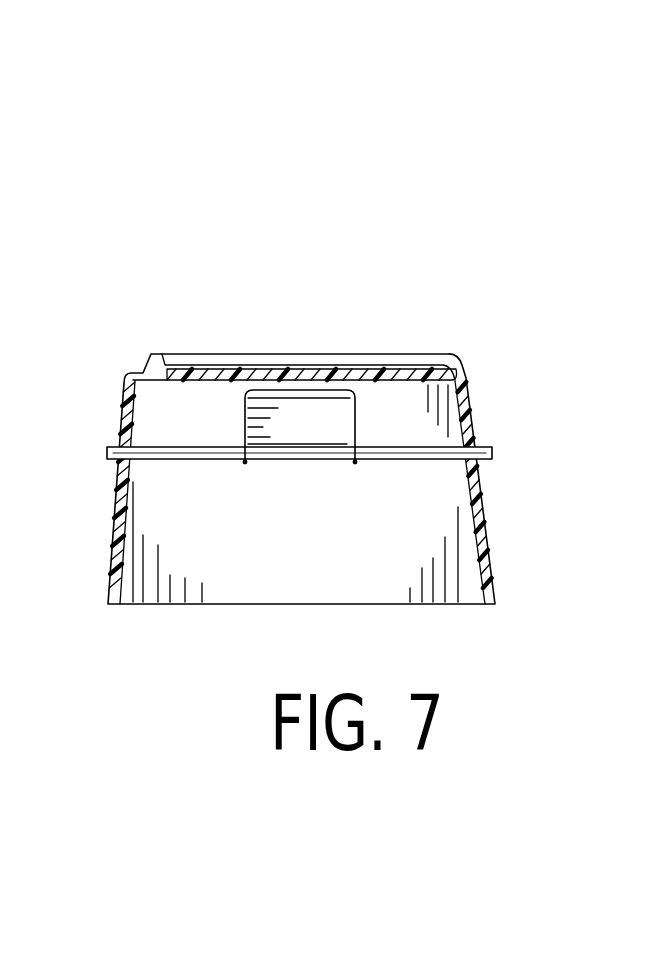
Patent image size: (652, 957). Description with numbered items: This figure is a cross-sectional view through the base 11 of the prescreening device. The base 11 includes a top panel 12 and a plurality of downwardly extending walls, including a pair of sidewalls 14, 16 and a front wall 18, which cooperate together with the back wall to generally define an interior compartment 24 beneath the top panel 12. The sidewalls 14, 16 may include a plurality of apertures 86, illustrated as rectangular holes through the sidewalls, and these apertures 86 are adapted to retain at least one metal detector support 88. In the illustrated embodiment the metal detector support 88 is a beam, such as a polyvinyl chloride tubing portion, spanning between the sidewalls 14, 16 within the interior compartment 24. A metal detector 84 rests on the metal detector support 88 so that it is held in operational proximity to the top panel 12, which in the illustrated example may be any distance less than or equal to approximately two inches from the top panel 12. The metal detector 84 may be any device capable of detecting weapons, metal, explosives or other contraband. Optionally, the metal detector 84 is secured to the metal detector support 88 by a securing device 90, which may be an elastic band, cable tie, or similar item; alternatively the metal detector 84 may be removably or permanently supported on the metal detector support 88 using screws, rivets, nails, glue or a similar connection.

The base 11 is at (228, 198).
The top panel 12 is at (393, 370).
The sidewall 14 is at (475, 384).
The sidewall 16 is at (128, 377).
The front wall 18 is at (217, 585).
The interior compartment 24 is at (367, 573).
The metal detector 84 is at (333, 427).
The apertures 86 is at (122, 428).
The metal detector support 88 is at (392, 453).
The securing device 90 is at (330, 388).